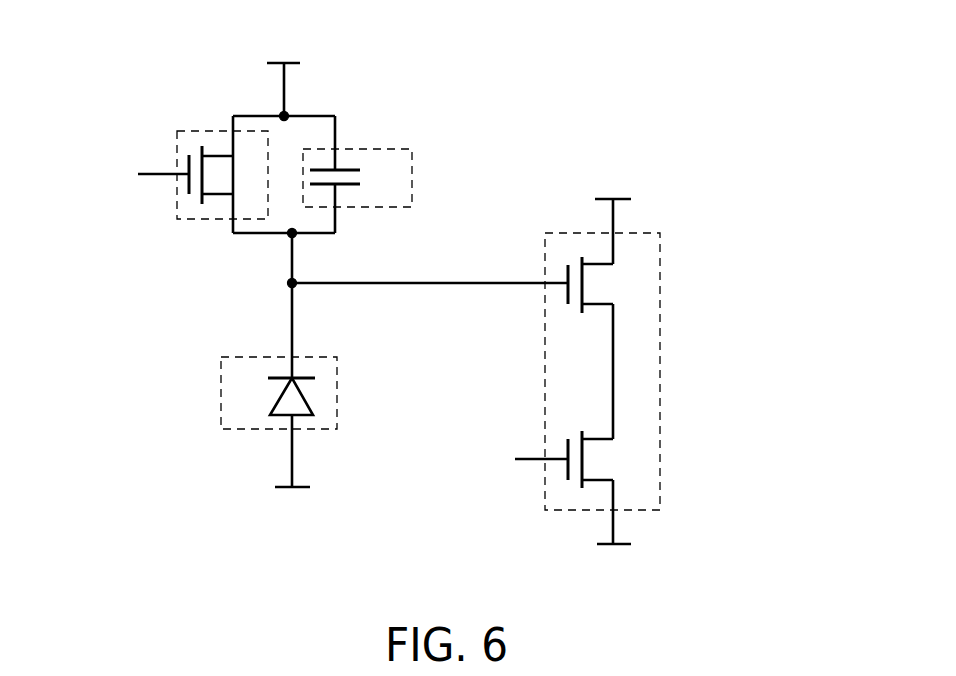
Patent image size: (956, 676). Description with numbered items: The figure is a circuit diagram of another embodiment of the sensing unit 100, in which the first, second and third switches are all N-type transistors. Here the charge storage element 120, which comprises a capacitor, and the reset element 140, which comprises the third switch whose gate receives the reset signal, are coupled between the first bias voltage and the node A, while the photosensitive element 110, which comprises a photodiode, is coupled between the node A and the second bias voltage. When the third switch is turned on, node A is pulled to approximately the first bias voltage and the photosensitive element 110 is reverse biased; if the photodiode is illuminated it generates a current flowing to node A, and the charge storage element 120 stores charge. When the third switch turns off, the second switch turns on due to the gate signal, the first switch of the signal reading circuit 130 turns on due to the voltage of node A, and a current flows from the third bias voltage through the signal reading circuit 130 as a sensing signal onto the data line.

The sensing unit 100 is at (658, 99).
The photosensitive element 110 is at (338, 392).
The charge storage element 120 is at (413, 178).
The signal reading circuit 130 is at (661, 370).
The reset element 140 is at (195, 131).